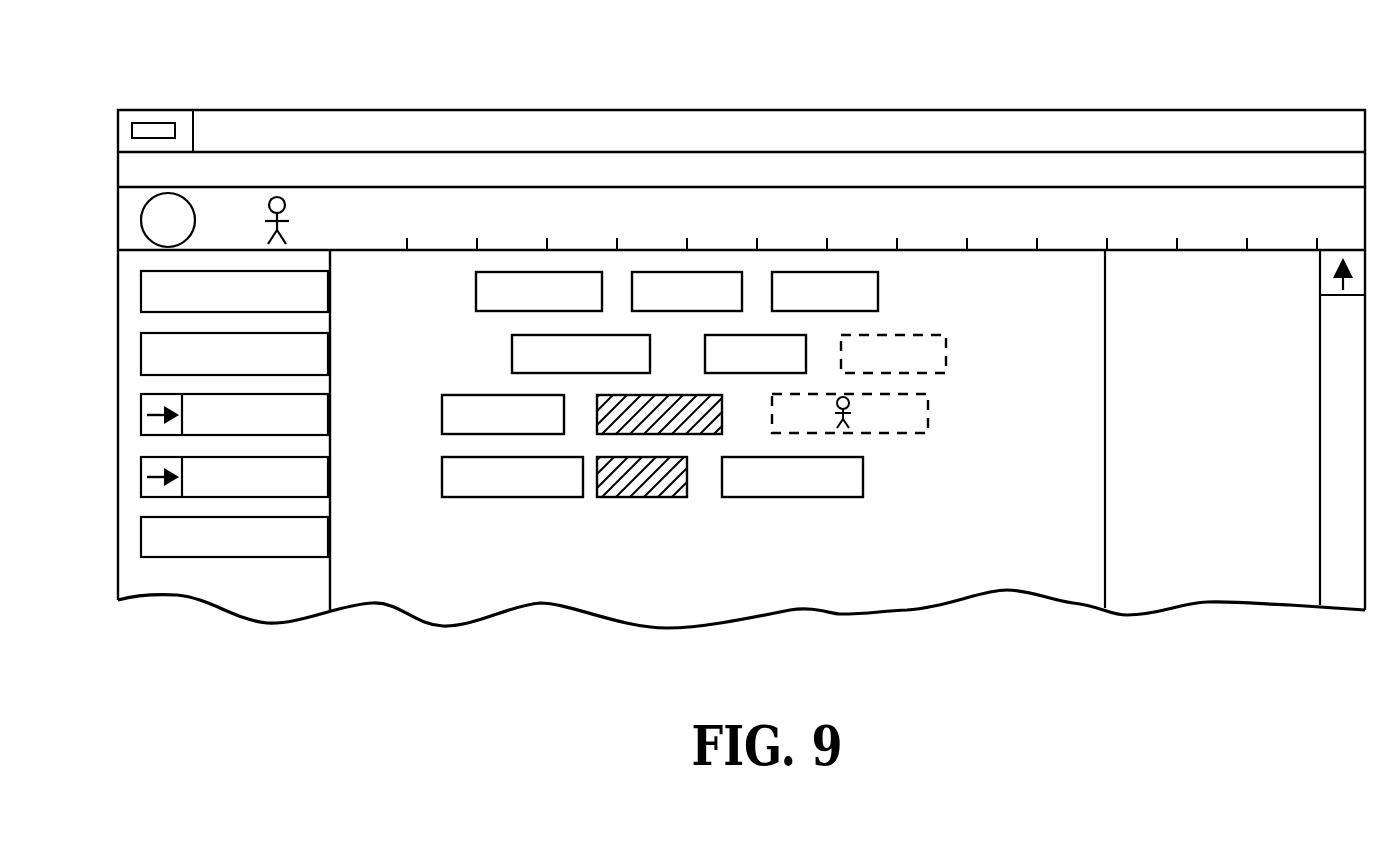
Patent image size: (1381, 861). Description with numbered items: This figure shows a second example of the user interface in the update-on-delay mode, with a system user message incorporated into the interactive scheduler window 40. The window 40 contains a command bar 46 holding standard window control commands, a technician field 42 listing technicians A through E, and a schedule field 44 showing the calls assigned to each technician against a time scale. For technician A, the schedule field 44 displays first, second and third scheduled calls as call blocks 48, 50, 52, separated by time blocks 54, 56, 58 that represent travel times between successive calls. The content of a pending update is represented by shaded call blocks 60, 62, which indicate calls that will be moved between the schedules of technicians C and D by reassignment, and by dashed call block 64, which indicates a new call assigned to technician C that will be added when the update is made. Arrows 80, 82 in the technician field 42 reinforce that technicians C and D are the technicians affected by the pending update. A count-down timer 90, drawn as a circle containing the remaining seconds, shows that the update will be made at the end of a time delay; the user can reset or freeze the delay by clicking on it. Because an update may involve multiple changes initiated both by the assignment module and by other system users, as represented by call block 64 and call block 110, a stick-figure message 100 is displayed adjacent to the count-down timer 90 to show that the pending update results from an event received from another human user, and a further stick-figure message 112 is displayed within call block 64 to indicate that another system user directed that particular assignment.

The scheduler window 40 is at (333, 118).
The technician field 42 is at (130, 317).
The schedule field 44 is at (407, 592).
The command bar 46 is at (128, 169).
The call block 48 is at (485, 294).
The call block 50 is at (710, 302).
The call block 52 is at (868, 295).
The time block 54 is at (450, 288).
The time block 56 is at (613, 295).
The time block 58 is at (756, 295).
The call block 60 is at (632, 487).
The call block 62 is at (690, 427).
The call block 64 is at (922, 413).
The arrow 80 is at (148, 430).
The arrow 82 is at (148, 489).
The count-down timer 90 is at (128, 232).
The stick figure 100 is at (270, 196).
The call block 110 is at (938, 357).
The stick figure 112 is at (848, 422).